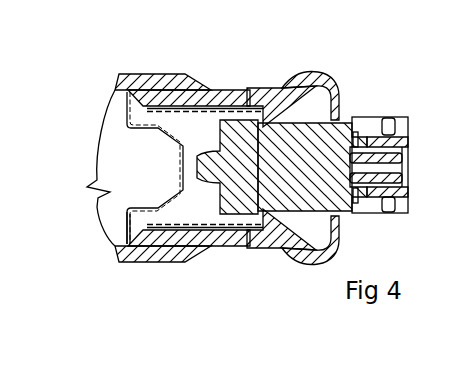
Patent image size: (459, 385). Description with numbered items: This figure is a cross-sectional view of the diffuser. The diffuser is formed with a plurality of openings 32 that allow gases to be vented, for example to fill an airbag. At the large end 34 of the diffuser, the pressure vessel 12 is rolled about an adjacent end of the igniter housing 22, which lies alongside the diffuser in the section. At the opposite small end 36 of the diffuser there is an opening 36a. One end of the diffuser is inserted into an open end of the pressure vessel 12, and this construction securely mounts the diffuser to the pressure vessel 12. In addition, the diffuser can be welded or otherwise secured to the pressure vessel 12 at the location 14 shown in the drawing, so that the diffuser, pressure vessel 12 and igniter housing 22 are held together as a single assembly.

The pressure vessel 12 is at (153, 255).
The location 14 is at (197, 248).
The igniter housing 22 is at (300, 110).
The openings 32 is at (240, 97).
The large end 34 is at (337, 90).
The small end 36 is at (155, 62).
The opening 36a is at (127, 208).